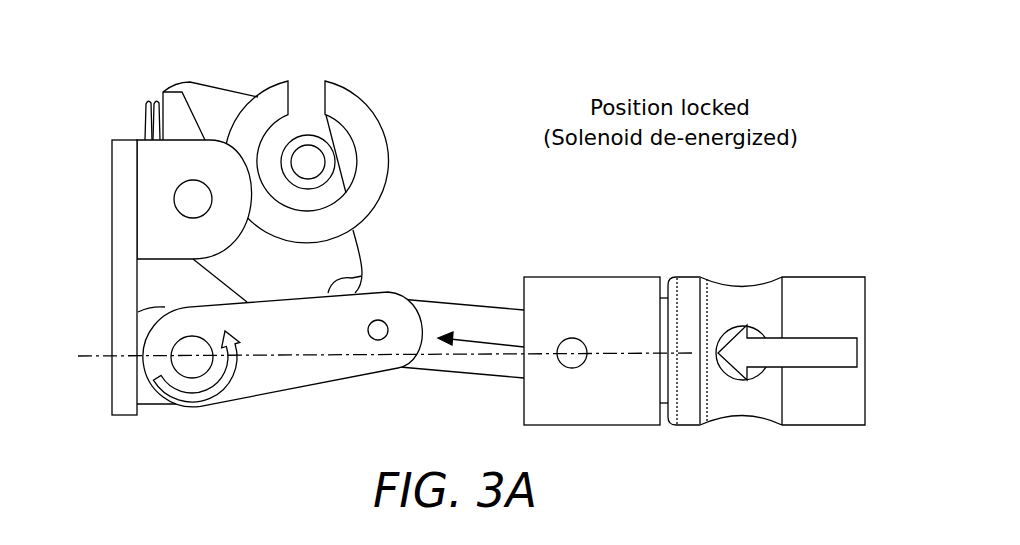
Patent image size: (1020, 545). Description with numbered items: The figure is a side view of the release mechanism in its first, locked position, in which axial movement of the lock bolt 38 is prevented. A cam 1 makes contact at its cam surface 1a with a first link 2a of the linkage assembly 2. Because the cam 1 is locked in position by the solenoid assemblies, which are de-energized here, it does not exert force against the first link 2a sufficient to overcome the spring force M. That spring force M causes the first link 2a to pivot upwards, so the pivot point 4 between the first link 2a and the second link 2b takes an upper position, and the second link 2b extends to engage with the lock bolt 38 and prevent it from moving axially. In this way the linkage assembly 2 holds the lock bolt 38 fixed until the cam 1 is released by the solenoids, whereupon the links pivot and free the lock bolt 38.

The cam 1 is at (212, 98).
The cam surface 1a is at (357, 292).
The linkage assembly 2 is at (282, 370).
The first link 2a is at (342, 381).
The second link 2b is at (473, 374).
The pivot point 4 is at (384, 322).
The lock bolt 38 is at (832, 277).
The spring force M is at (112, 400).